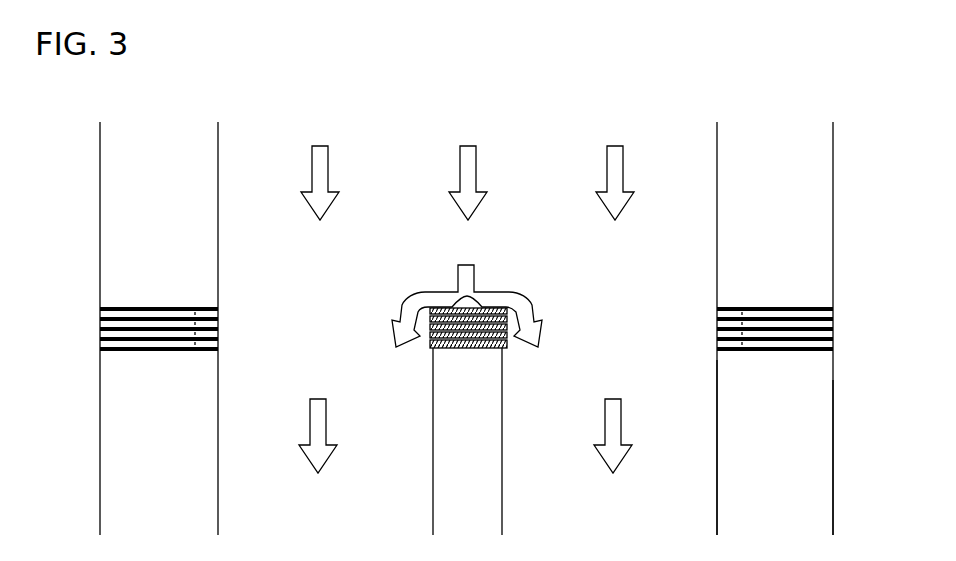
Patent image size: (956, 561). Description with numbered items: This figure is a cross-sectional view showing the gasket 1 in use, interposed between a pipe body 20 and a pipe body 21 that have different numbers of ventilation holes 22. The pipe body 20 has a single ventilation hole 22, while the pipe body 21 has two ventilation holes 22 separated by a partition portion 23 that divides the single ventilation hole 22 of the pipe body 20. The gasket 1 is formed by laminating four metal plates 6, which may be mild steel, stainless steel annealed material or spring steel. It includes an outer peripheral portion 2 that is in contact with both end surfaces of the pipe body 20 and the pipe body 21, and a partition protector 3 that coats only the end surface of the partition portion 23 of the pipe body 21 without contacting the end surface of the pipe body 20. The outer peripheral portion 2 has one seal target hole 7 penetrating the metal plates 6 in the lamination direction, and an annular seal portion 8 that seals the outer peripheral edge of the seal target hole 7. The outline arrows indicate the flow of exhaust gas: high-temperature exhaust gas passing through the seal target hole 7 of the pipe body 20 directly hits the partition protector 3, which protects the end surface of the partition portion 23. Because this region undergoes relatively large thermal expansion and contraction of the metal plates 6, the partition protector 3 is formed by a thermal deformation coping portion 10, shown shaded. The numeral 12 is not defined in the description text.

The gasket 1 is at (131, 273).
The outer peripheral portion 2 is at (765, 308).
The partition protector 3 is at (487, 308).
The metal plate 6 is at (118, 312).
The seal target hole 7 is at (717, 322).
The seal portion 8 is at (208, 307).
The thermal deformation coping portion 10 is at (448, 308).
The guide wall 12 is at (716, 400).
The pipe body 20 is at (836, 272).
The pipe body 21 is at (836, 420).
The ventilation hole 22 is at (218, 405).
The partition portion 23 is at (488, 402).